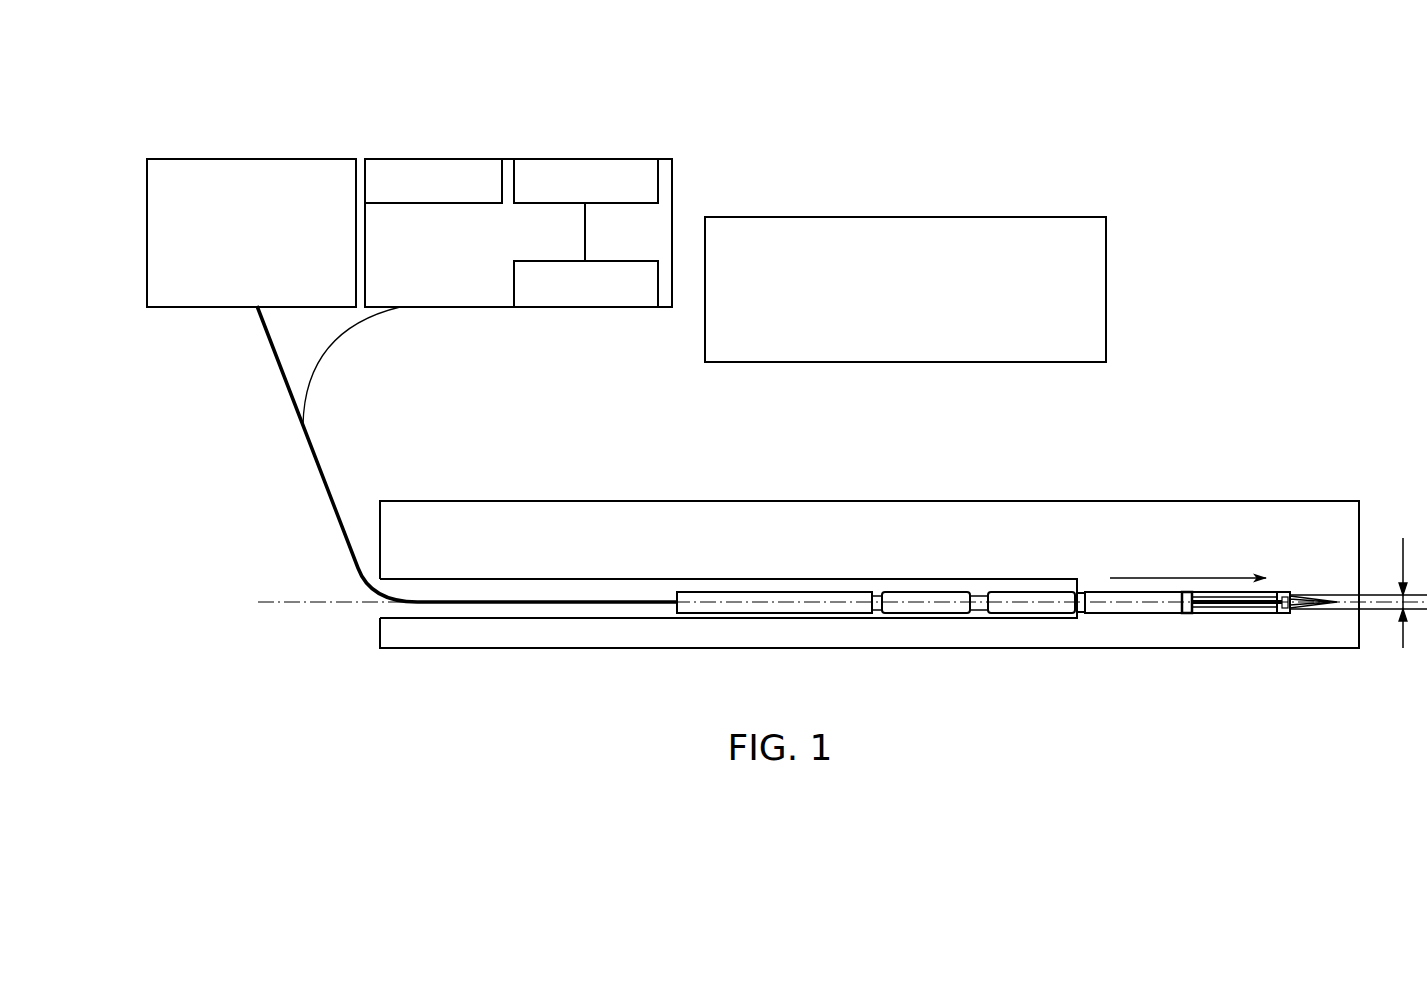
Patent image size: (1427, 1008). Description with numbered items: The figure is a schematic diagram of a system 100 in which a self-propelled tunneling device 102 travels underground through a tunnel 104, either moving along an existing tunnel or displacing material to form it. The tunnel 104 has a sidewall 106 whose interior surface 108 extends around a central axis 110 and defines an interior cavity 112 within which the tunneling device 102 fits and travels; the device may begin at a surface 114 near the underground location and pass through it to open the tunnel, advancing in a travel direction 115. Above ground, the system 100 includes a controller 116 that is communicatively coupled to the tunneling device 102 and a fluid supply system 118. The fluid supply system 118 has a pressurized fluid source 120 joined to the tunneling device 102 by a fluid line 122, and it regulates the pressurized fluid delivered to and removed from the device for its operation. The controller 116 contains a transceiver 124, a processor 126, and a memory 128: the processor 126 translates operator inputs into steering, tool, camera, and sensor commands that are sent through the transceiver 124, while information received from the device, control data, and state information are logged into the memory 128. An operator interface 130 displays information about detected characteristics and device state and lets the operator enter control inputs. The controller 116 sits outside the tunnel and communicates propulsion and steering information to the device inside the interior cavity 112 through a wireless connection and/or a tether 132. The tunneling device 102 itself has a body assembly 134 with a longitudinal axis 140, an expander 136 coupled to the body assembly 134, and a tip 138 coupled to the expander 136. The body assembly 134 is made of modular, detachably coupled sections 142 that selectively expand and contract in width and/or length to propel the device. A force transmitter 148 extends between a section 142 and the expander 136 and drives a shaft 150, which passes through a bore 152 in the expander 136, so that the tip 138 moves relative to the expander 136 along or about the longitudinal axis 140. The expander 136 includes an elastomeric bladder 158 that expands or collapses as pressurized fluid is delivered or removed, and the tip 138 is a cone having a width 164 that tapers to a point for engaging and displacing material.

The system 100 is at (759, 385).
The tunneling device 102 is at (1003, 579).
The tunnel 104 is at (441, 576).
The sidewall 106 is at (493, 612).
The interior surface 108 is at (557, 592).
The central axis 110 is at (268, 598).
The interior cavity 112 is at (630, 592).
The surface 114 is at (380, 630).
The travel direction 115 is at (1133, 578).
The controller 116 is at (561, 233).
The fluid supply system 118 is at (223, 185).
The pressurized fluid source 120 is at (197, 158).
The fluid line 122 is at (281, 368).
The transceiver 124 is at (570, 309).
The processor 126 is at (427, 157).
The memory 128 is at (577, 157).
The operator interface 130 is at (830, 363).
The tether 132 is at (272, 423).
The body assembly 134 is at (938, 616).
The expander 136 is at (1233, 613).
The tip 138 is at (1300, 610).
The longitudinal axis 140 is at (707, 630).
The sections 142 is at (1000, 592).
The force transmitter 148 is at (1137, 613).
The shaft 150 is at (1242, 590).
The bore 152 is at (1265, 593).
The bladder 158 is at (1203, 590).
The width 164 is at (1392, 545).